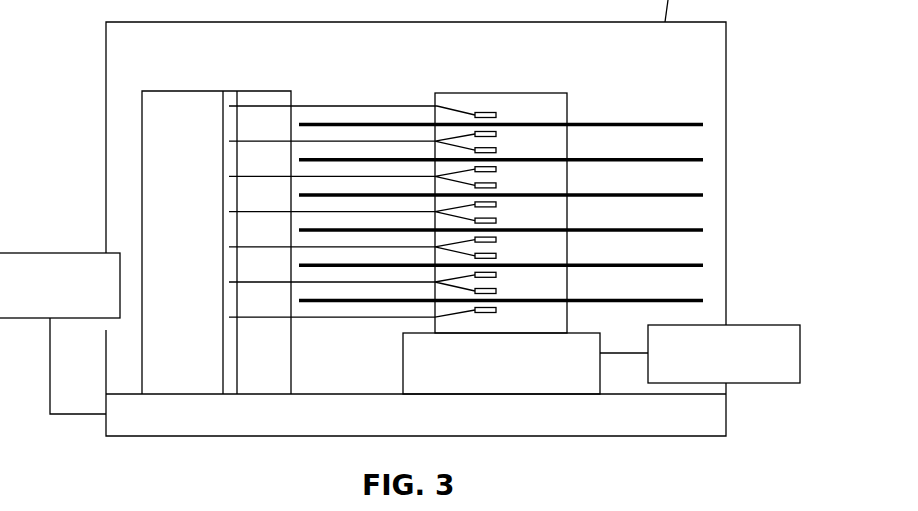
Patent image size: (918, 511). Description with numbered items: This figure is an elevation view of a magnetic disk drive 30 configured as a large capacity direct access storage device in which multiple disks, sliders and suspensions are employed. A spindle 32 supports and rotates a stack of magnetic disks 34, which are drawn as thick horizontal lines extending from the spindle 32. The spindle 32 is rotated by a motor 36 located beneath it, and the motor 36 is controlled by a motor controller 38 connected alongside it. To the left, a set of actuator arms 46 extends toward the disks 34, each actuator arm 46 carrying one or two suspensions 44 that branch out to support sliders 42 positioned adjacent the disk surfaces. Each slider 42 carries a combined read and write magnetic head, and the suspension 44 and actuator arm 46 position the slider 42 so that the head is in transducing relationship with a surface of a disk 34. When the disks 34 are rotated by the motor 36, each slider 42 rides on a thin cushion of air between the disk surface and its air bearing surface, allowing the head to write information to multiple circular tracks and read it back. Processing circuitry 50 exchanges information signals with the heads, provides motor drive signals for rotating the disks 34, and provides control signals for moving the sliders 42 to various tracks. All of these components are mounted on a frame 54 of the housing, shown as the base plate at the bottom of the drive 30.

The magnetic disk drive 30 is at (618, 96).
The spindle 32 is at (555, 92).
The magnetic disk 34 is at (703, 126).
The motor 36 is at (515, 376).
The motor controller 38 is at (758, 384).
The slider 42 is at (497, 133).
The suspension 44 is at (468, 146).
The actuator arm 46 is at (400, 139).
The processing circuitry 50 is at (20, 252).
The frame 54 is at (158, 437).